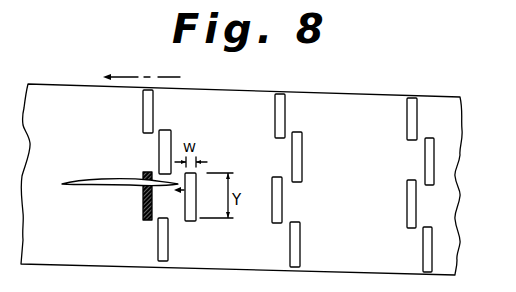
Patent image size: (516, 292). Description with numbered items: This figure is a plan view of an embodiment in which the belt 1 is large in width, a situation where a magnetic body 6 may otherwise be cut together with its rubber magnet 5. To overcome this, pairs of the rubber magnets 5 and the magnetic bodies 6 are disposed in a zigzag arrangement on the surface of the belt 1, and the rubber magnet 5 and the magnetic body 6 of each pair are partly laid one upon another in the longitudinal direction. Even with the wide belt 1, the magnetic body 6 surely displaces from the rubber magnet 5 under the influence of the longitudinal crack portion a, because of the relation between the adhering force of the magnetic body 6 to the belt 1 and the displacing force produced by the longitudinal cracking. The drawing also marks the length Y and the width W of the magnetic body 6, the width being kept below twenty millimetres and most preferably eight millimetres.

The belt 1 is at (453, 175).
The rubber magnet 5 is at (145, 205).
The magnetic body 6 is at (197, 200).
The longitudinal crack portion a is at (95, 188).